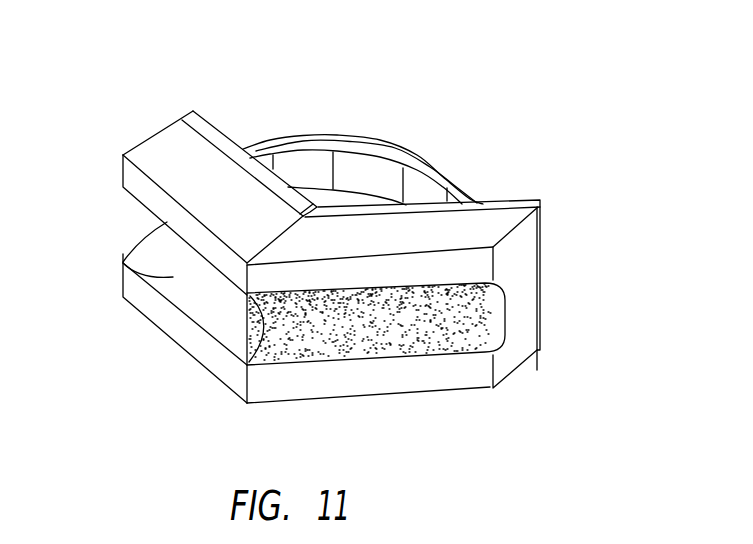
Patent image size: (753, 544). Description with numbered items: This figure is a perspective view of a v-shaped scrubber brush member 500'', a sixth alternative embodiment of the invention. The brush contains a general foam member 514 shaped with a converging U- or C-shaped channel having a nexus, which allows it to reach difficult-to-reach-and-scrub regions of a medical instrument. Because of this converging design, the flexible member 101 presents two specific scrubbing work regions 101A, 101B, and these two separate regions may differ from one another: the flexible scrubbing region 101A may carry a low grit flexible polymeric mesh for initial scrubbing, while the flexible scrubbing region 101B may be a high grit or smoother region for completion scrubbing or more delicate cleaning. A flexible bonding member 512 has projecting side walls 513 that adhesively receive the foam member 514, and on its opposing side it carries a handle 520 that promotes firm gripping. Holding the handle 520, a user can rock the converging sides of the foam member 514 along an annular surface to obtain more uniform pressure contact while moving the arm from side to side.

The v-shaped scrubber brush member 500'' is at (306, 245).
The flexible bonding member 512 is at (215, 135).
The opposing-side handle 520 is at (378, 144).
The foam member 514 is at (496, 247).
The projecting side walls 513 is at (543, 268).
The flexible member 101 is at (484, 339).
The flexible scrubbing region 101A is at (376, 324).
The flexible scrubbing region 101B is at (122, 297).